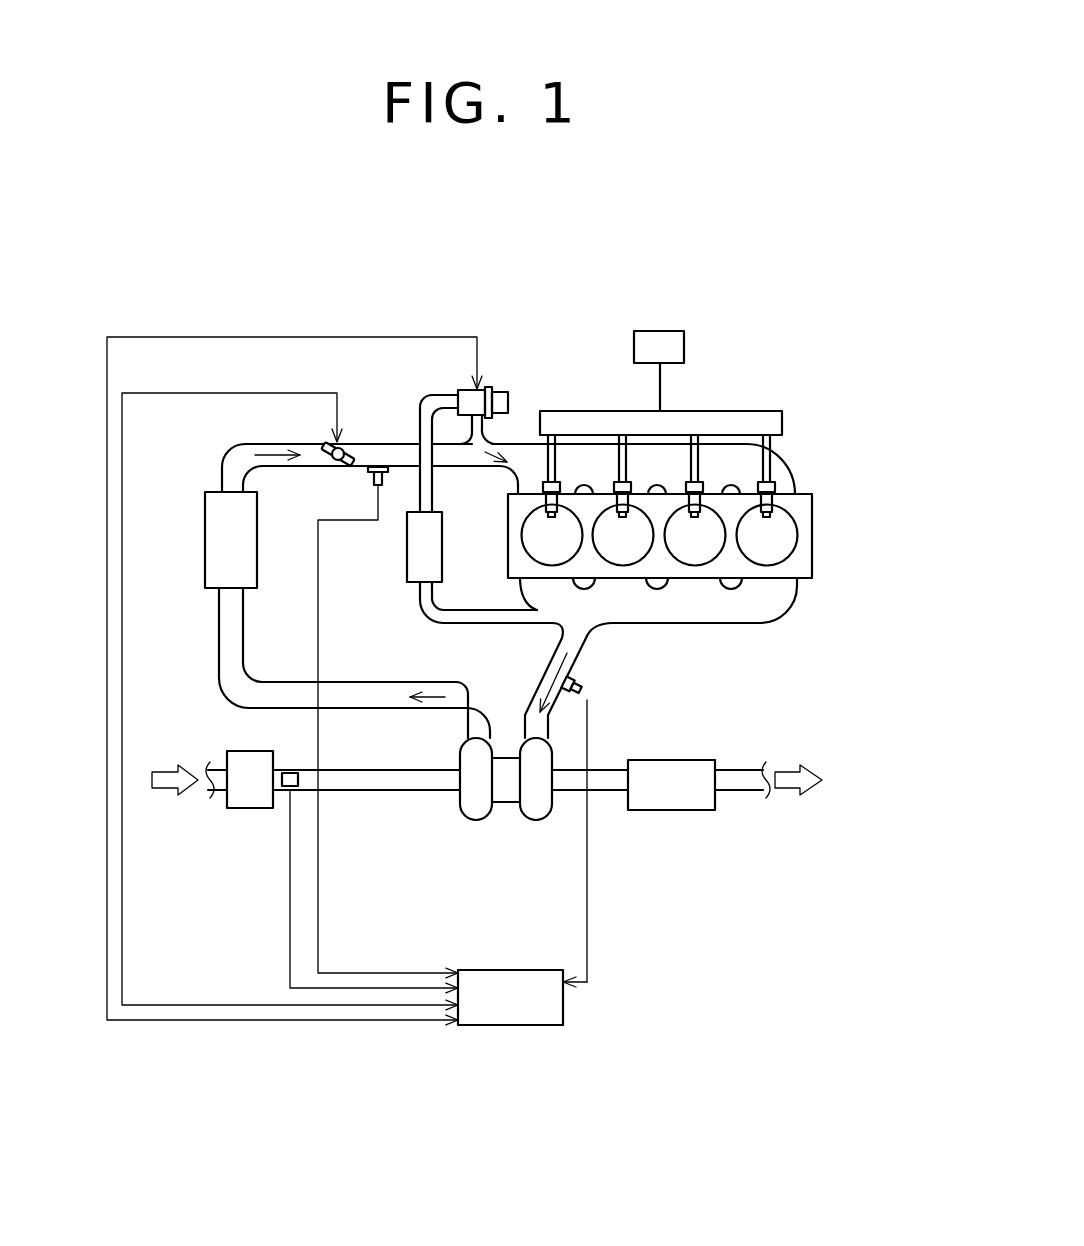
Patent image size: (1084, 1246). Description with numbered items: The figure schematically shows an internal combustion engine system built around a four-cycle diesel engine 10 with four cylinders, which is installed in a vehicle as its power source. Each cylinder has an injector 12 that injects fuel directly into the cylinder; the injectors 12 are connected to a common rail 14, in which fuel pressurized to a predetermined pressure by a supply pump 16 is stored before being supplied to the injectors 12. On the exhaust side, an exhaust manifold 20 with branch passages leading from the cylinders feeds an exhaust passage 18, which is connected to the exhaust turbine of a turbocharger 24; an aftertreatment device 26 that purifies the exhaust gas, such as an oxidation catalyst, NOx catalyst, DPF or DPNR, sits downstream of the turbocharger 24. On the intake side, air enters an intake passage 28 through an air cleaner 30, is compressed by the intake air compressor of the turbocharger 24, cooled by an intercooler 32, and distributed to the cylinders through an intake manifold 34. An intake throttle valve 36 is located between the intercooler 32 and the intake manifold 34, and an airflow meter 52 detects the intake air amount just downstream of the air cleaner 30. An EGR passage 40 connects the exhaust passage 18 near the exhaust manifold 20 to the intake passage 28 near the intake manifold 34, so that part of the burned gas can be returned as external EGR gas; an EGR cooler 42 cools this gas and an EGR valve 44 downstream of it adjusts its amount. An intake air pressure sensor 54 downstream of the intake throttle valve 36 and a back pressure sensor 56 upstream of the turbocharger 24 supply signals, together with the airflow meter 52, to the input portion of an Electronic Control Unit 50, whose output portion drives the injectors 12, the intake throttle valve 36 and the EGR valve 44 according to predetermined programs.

The four-cycle diesel engine 10 is at (711, 514).
The injector 12 is at (797, 478).
The common rail 14 is at (750, 410).
The supply pump 16 is at (670, 331).
The exhaust passage 18 is at (588, 647).
The exhaust manifold 20 is at (707, 627).
The turbocharger 24 is at (472, 820).
The aftertreatment device 26 is at (700, 760).
The intake passage 28 is at (375, 443).
The air cleaner 30 is at (238, 750).
The intercooler 32 is at (257, 545).
The intake manifold 34 is at (783, 455).
The intake throttle valve 36 is at (328, 447).
The EGR passage 40 is at (432, 490).
The EGR cooler 42 is at (407, 555).
The EGR valve 44 is at (490, 388).
The Electronic Control Unit 50 is at (528, 968).
The airflow meter 52 is at (290, 771).
The intake air pressure sensor 54 is at (375, 477).
The back pressure sensor 56 is at (584, 688).